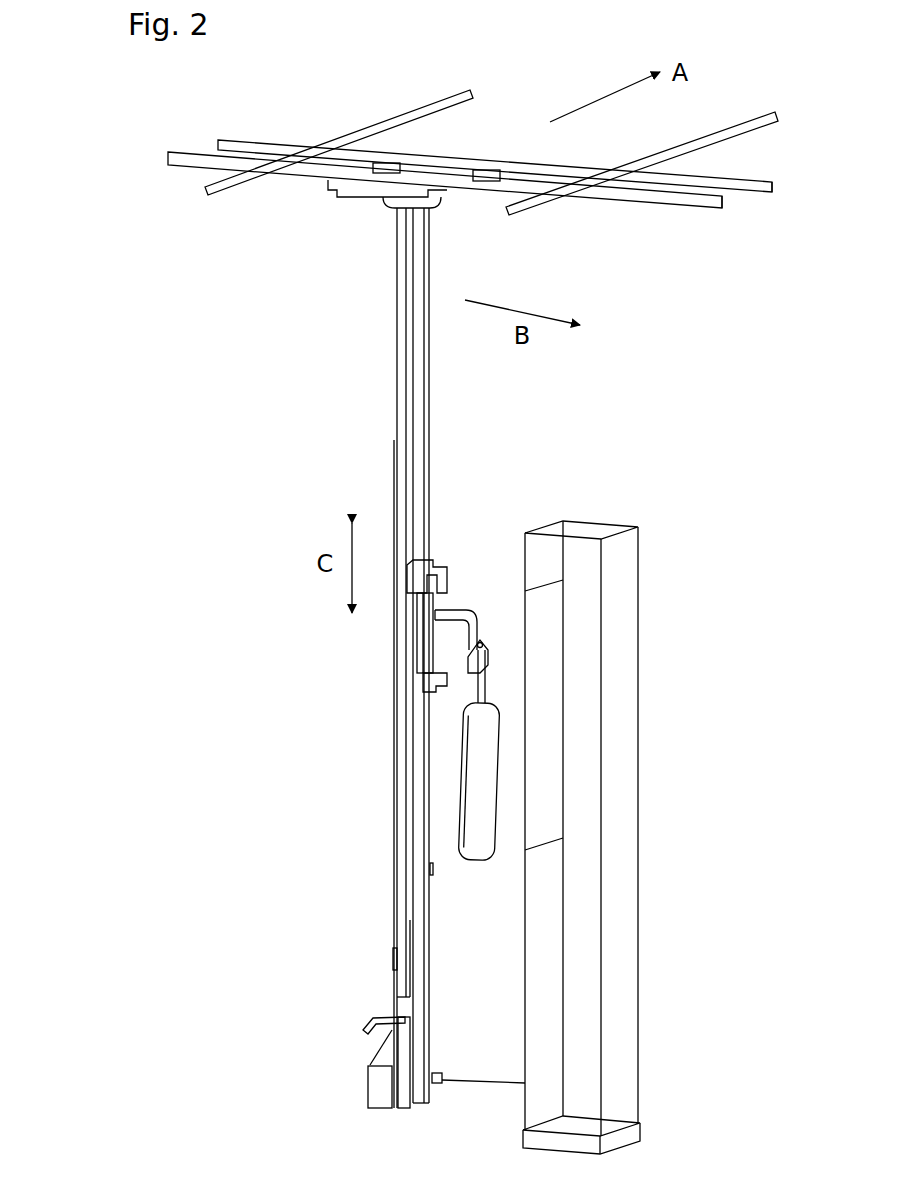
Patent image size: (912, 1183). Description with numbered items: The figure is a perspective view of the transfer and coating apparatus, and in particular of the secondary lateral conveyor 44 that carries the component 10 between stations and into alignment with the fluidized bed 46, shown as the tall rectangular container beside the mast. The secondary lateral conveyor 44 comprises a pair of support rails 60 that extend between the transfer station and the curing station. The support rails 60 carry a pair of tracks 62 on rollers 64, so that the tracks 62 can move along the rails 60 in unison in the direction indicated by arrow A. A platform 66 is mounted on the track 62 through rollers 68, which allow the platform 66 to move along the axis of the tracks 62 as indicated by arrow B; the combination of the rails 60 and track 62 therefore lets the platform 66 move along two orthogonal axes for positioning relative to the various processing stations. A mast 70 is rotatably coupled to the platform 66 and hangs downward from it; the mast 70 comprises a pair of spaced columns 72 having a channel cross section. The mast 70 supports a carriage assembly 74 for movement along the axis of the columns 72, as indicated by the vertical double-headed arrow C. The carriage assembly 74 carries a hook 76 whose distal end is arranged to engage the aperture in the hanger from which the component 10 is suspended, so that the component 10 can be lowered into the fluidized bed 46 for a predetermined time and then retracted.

The component 10 is at (478, 862).
The secondary lateral conveyor 44 is at (419, 195).
The fluidized bed 46 is at (627, 943).
The support rails 60 is at (217, 194).
The tracks 62 is at (710, 207).
The rollers 64 is at (400, 145).
The platform 66 is at (362, 197).
The rollers 68 is at (326, 182).
The mast 70 is at (376, 658).
The columns 72 is at (397, 373).
The carriage assembly 74 is at (442, 707).
The hook 76 is at (458, 608).